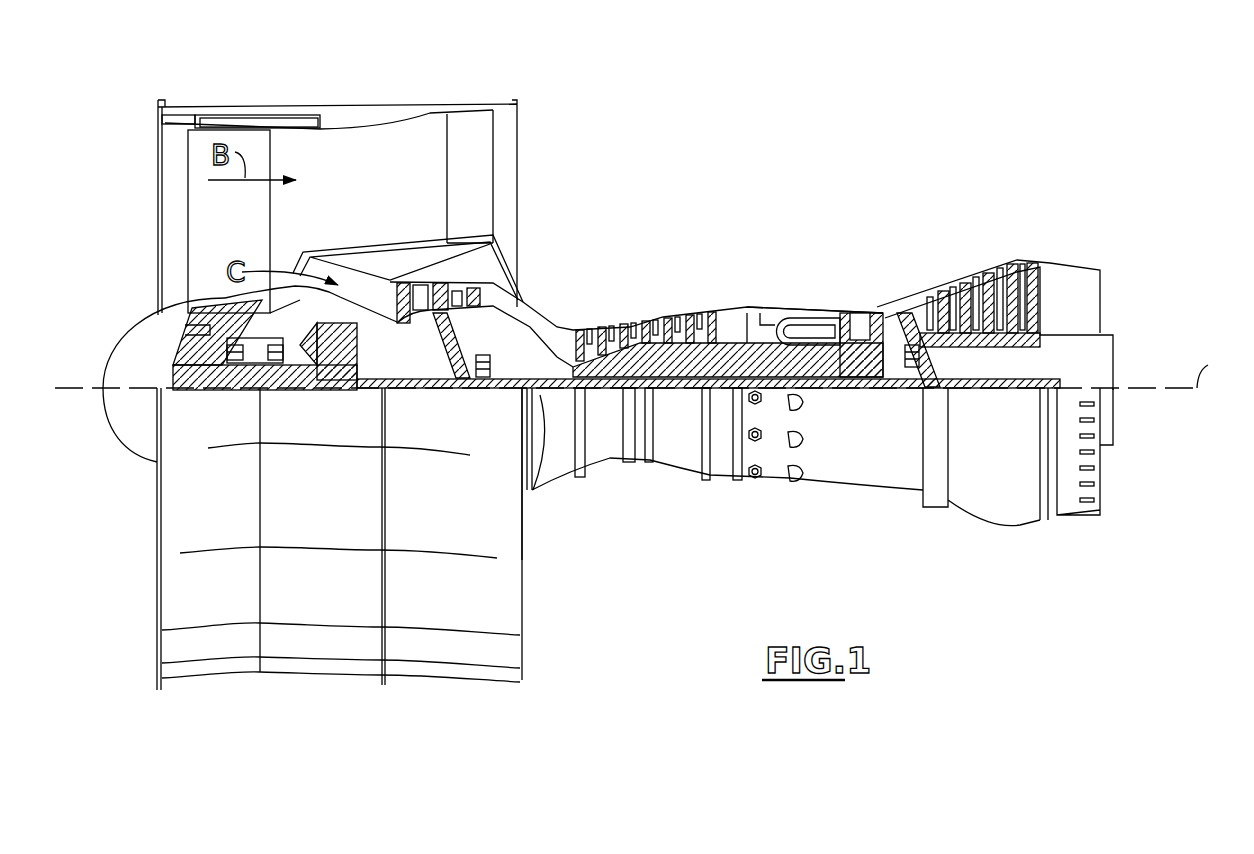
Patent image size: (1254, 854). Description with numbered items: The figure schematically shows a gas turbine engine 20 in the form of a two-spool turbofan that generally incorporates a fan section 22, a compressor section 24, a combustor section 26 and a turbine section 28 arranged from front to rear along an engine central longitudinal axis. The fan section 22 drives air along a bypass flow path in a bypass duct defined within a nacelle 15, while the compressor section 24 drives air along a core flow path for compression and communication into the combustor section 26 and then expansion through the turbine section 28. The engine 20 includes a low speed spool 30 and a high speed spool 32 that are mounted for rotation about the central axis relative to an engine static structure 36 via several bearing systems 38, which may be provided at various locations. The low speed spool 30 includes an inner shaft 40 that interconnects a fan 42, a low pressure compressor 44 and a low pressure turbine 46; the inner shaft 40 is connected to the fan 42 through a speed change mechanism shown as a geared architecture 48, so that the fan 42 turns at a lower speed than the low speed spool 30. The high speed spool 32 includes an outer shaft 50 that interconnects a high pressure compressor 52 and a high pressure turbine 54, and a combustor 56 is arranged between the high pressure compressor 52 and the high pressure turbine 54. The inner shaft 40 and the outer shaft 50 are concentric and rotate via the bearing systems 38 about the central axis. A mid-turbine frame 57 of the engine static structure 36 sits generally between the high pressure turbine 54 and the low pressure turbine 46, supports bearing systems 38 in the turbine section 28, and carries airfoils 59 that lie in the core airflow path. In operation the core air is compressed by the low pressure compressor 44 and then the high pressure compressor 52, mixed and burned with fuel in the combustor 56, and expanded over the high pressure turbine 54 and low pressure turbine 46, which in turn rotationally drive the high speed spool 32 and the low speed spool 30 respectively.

The nacelle 15 is at (340, 110).
The gas turbine engine 20 is at (802, 156).
The fan section 22 is at (270, 95).
The compressor section 24 is at (580, 290).
The combustor section 26 is at (797, 283).
The turbine section 28 is at (946, 241).
The low speed spool 30 is at (680, 402).
The high speed spool 32 is at (727, 340).
The engine static structure 36 is at (720, 482).
The bearing systems 38 is at (478, 375).
The inner shaft 40 is at (540, 400).
The fan 42 is at (247, 234).
The low pressure compressor 44 is at (447, 293).
The low pressure turbine 46 is at (988, 283).
The geared architecture 48 is at (345, 372).
The outer shaft 50 is at (800, 392).
The high pressure compressor 52 is at (650, 355).
The high pressure turbine 54 is at (862, 312).
The combustor 56 is at (797, 330).
The mid-turbine frame 57 is at (905, 290).
The airfoils 59 is at (932, 352).